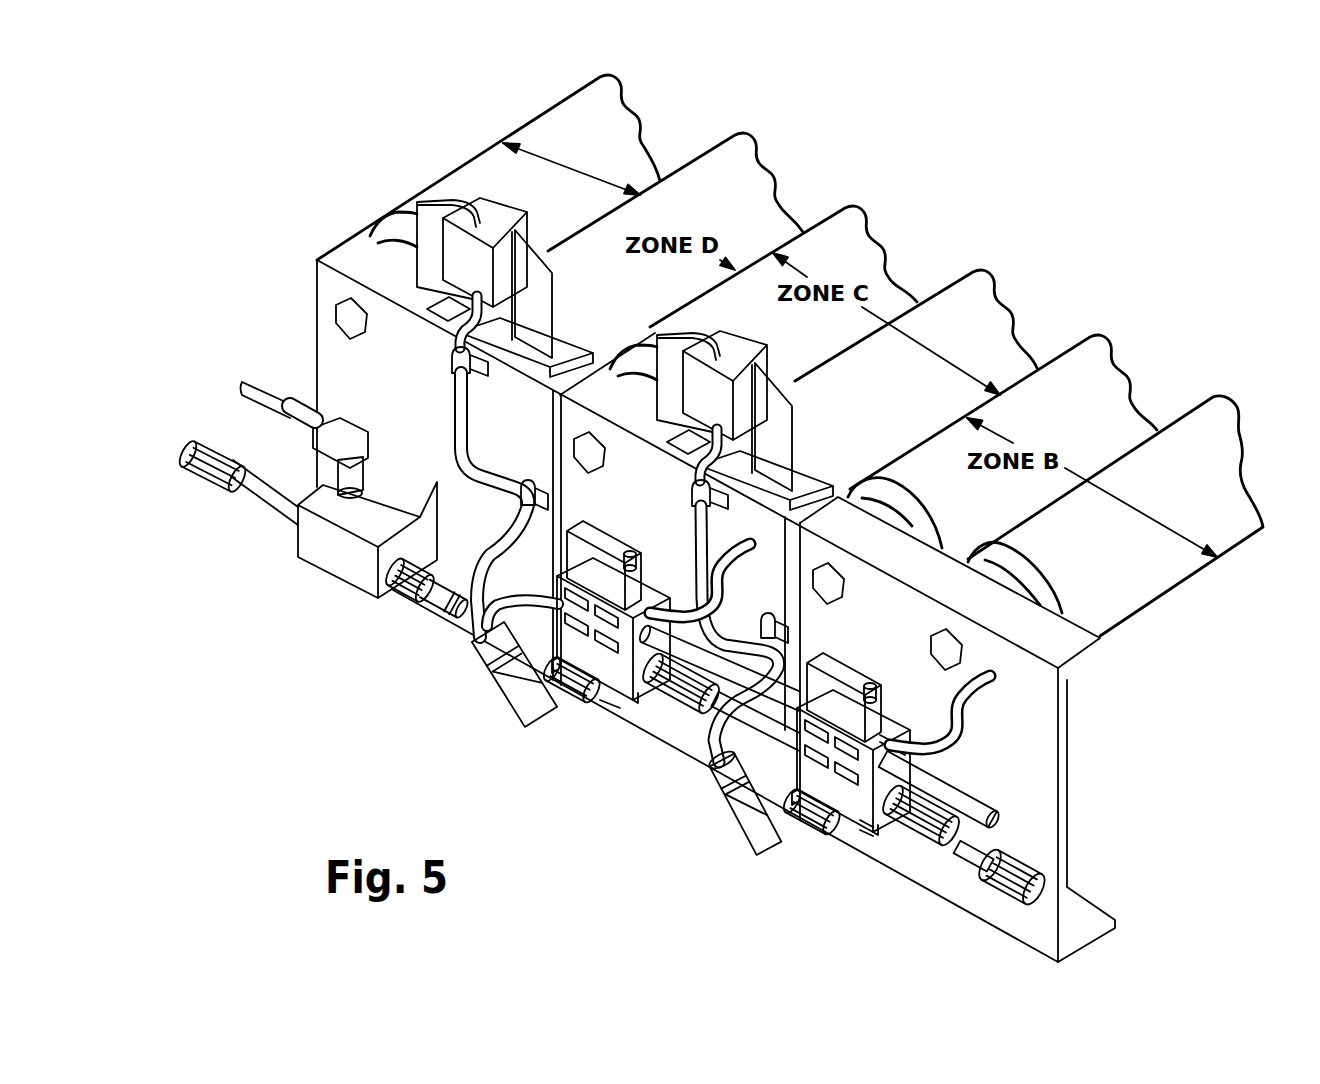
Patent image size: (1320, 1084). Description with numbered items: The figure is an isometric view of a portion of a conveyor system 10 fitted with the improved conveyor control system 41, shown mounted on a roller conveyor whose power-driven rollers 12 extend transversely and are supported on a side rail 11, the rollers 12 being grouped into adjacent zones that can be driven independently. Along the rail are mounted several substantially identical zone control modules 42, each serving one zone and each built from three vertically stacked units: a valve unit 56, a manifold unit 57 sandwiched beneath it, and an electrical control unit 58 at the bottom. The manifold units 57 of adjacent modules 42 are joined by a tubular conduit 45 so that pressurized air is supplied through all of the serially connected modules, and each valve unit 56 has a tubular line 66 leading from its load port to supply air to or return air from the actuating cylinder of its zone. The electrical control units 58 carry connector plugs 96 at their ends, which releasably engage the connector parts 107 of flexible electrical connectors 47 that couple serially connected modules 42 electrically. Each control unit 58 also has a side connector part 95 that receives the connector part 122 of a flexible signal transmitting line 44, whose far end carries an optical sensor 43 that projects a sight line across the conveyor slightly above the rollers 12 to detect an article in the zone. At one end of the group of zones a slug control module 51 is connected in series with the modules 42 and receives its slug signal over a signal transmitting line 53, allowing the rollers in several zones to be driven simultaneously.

The conveyor system 10 is at (1140, 262).
The side rail 11 is at (1053, 778).
The rollers 12 is at (862, 235).
The conveyor control system 41 is at (628, 765).
The zone control module 42 is at (848, 827).
The optical sensor 43 is at (500, 217).
The flexible signal transmitting line 44 is at (467, 432).
The tubular conduit 45 is at (978, 800).
The flexible electrical connectors 47 is at (970, 853).
The slug control module 51 is at (323, 573).
The signal transmitting line 53 is at (260, 397).
The valve unit 56 is at (837, 680).
The manifold unit 57 is at (893, 747).
The electrical control unit 58 is at (873, 827).
The tubular line 66 is at (970, 688).
The connector part 95 is at (833, 817).
The connector plug 96 is at (922, 800).
The connector part 107 is at (937, 847).
The connector part 122 is at (797, 840).